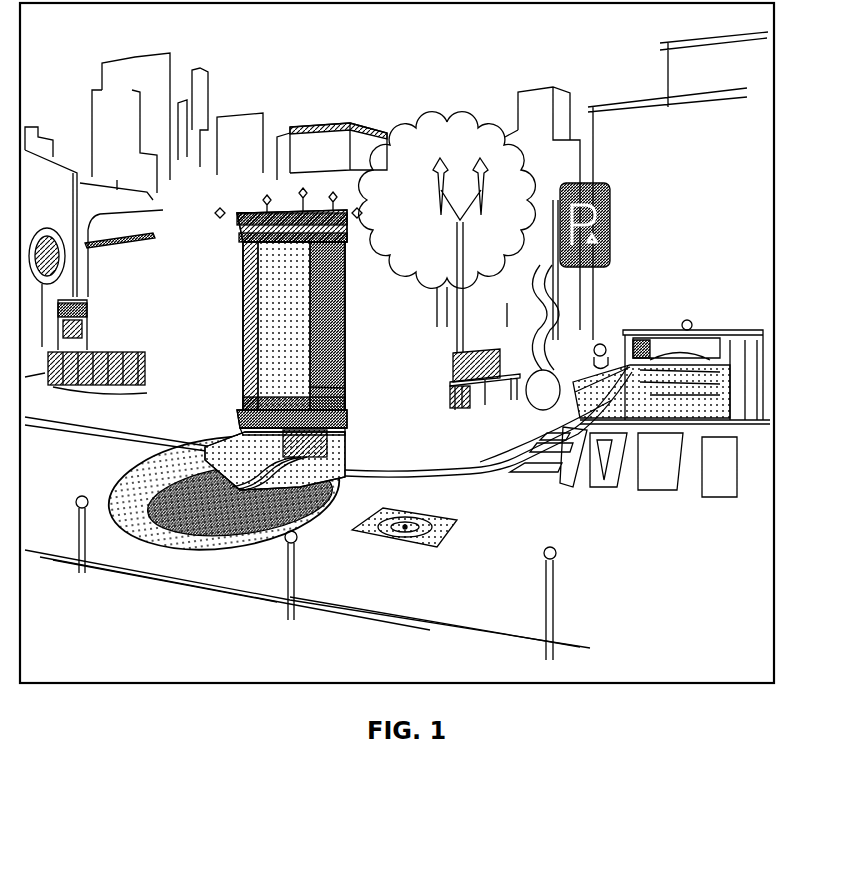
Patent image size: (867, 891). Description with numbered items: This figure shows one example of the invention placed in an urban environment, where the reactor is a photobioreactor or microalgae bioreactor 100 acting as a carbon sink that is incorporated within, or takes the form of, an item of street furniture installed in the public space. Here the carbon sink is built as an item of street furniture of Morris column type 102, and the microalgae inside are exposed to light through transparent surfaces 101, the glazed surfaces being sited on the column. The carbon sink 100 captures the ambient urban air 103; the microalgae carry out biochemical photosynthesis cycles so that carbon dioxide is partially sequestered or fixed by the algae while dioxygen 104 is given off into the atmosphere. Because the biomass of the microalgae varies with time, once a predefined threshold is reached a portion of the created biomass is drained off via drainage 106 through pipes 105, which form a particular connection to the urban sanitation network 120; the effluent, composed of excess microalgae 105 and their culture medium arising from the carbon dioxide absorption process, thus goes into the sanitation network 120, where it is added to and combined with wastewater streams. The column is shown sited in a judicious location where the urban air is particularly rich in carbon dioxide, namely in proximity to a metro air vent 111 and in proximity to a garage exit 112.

The microalgae bioreactor 100 is at (233, 380).
The transparent surfaces 101 is at (248, 415).
The item of street furniture of Morris column type 102 is at (347, 345).
The ambient urban air 103 is at (350, 463).
The dioxygen 104 is at (250, 280).
The pipes 105 is at (240, 490).
The drainage 106 is at (333, 487).
The metro air vent 111 is at (110, 355).
The garage exit 112 is at (710, 363).
The sanitation network 120 is at (230, 573).